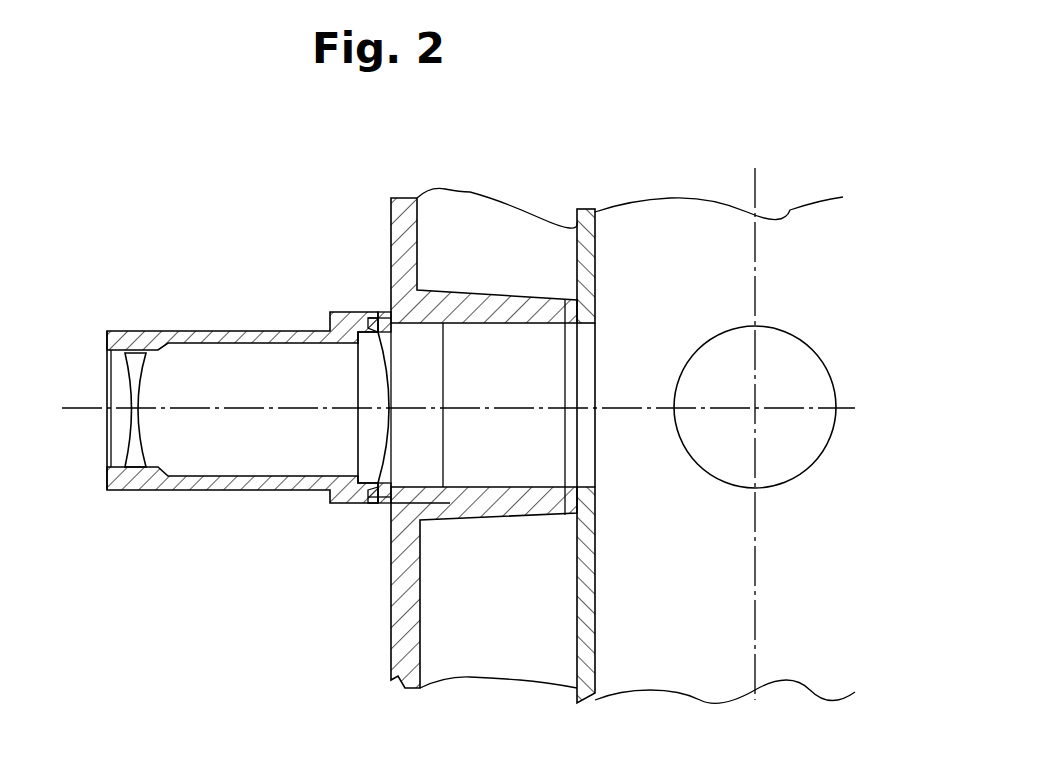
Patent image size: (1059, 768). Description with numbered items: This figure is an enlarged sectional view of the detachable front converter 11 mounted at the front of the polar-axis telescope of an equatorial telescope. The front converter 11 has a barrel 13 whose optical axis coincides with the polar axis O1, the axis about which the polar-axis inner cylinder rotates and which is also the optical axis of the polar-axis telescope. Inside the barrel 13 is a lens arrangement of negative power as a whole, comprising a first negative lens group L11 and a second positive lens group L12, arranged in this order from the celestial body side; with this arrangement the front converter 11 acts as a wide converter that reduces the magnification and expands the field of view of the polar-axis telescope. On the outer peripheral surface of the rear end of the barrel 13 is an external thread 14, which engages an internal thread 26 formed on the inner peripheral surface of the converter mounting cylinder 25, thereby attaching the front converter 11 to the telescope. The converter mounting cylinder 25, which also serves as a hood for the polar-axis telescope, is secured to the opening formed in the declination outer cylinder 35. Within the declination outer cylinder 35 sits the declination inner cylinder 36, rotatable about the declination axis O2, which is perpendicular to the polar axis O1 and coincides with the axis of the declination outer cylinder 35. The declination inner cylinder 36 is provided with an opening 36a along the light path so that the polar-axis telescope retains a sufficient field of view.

The front converter 11 is at (210, 420).
The barrel 13 is at (250, 330).
The external thread 14 is at (377, 312).
The converter mounting cylinder 25 is at (434, 430).
The internal thread 26 is at (362, 503).
The declination outer cylinder 35 is at (391, 230).
The declination inner cylinder 36 is at (649, 422).
The opening 36a is at (585, 438).
The first negative lens group L11 is at (125, 437).
The second positive lens group L12 is at (367, 440).
The polar axis O1 is at (443, 412).
The declination axis O2 is at (755, 421).